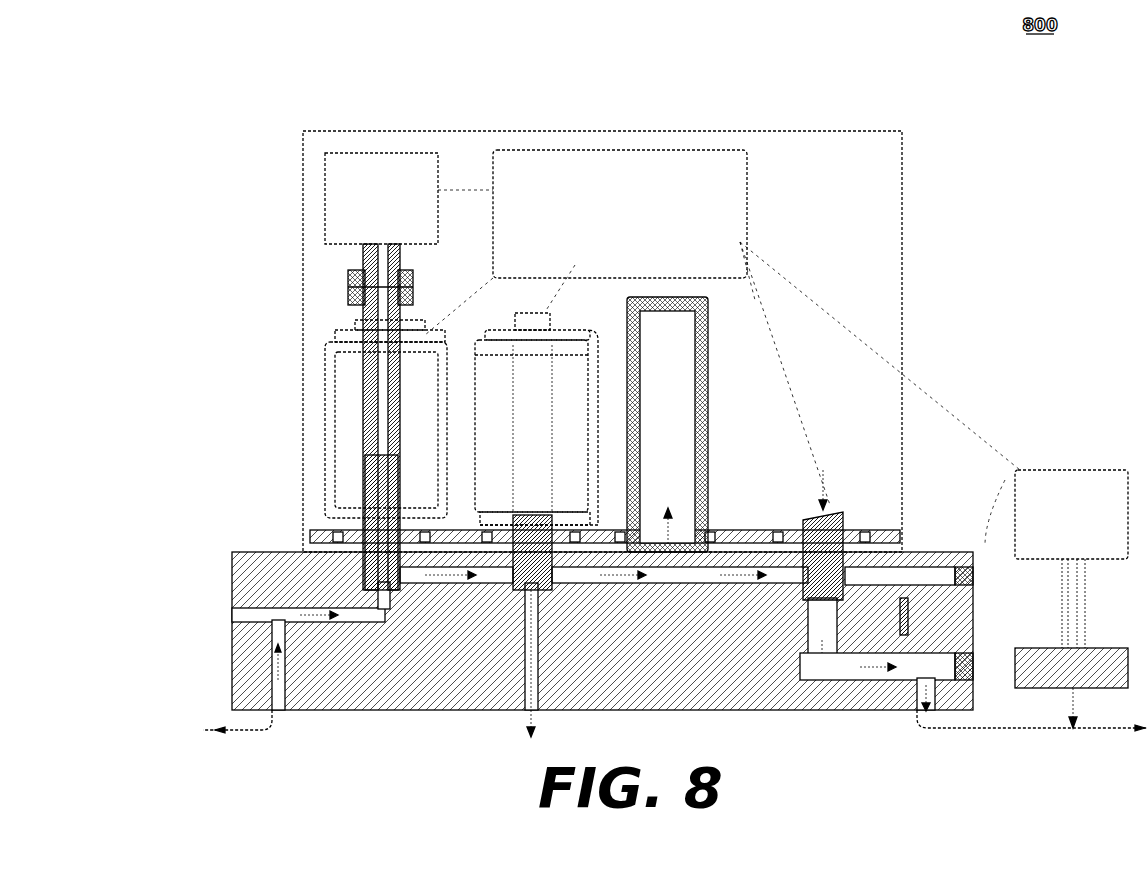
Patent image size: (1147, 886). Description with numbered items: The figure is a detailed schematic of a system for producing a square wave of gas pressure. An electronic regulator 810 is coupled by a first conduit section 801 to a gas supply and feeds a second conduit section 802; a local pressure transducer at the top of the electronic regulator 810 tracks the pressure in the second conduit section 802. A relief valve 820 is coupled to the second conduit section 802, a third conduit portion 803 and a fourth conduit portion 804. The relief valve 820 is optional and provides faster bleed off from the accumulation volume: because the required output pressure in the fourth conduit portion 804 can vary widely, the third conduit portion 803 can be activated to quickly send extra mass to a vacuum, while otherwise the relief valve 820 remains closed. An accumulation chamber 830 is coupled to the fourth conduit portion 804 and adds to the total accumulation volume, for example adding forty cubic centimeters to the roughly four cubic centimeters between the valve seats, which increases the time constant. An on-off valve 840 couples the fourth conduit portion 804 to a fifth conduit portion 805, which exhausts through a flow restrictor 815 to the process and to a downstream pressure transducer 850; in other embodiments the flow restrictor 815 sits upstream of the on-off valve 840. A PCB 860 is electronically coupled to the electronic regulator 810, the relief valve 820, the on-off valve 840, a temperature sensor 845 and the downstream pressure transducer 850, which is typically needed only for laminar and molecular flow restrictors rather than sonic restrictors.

The first conduit section 801 is at (297, 651).
The second conduit section 802 is at (450, 612).
The third conduit portion 803 is at (557, 664).
The fourth conduit portion 804 is at (729, 614).
The fifth conduit portion 805 is at (857, 701).
The electronic regulator 810 is at (330, 416).
The flow restrictor 815 is at (822, 610).
The relief valve 820 is at (522, 427).
The accumulation chamber 830 is at (653, 427).
The on-off valve 840 is at (855, 518).
The temperature sensor 845 is at (925, 615).
The downstream pressure transducer 850 is at (1058, 517).
The PCB 860 is at (602, 214).